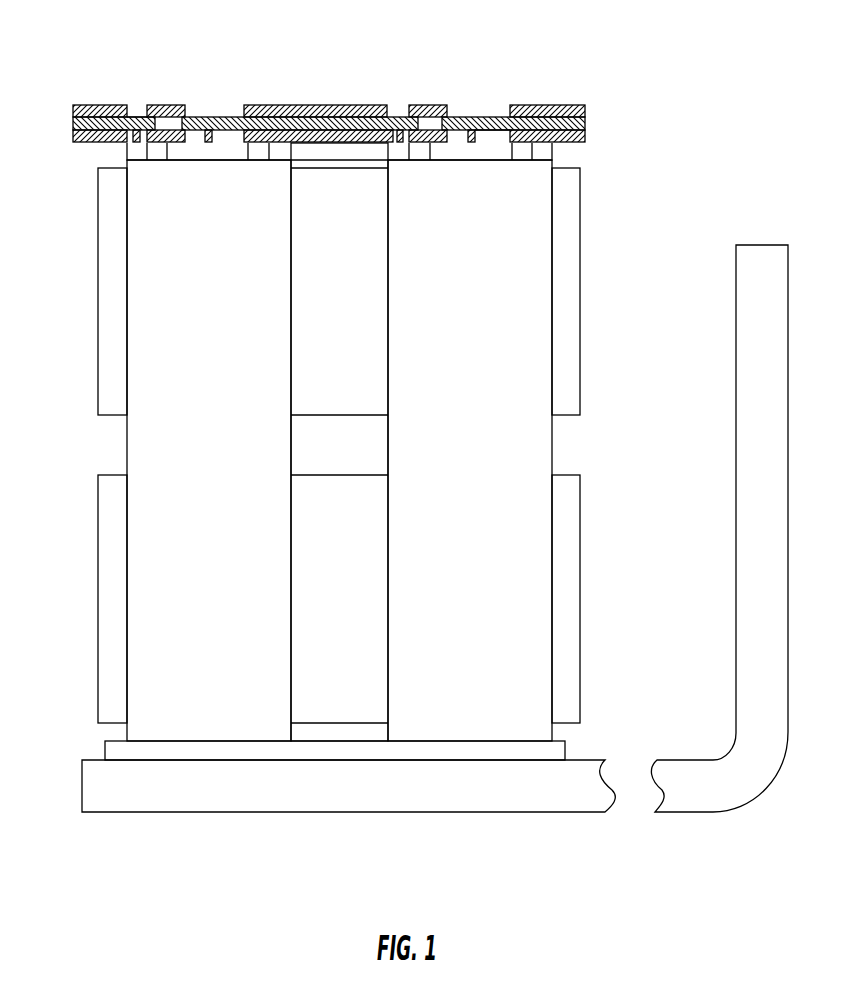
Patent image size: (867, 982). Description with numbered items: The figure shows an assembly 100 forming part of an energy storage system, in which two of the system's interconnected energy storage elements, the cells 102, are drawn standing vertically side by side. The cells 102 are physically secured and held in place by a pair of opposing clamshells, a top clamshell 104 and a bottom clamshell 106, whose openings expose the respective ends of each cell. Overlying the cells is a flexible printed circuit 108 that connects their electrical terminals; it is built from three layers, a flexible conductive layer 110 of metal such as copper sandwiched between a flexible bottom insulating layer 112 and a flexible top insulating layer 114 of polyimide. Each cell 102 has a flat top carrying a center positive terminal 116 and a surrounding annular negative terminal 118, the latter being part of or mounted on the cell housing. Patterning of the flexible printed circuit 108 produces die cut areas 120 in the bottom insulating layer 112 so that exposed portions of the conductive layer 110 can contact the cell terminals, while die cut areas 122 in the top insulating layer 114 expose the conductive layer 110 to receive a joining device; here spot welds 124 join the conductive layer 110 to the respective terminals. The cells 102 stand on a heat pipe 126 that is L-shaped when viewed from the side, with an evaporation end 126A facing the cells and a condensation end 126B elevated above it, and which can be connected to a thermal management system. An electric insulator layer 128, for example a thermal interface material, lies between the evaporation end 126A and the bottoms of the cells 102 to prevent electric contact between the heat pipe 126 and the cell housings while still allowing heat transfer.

The assembly 100 is at (238, 832).
The cells 102 is at (292, 450).
The top clamshell 104 is at (580, 325).
The bottom clamshell 106 is at (580, 543).
The flexible printed circuit 108 is at (72, 105).
The flexible conductive layer 110 is at (587, 122).
The flexible bottom insulating layer 112 is at (587, 138).
The flexible top insulating layer 114 is at (587, 110).
The center positive terminal 116 is at (258, 152).
The annular negative terminal 118 is at (127, 153).
The die cut areas 120 is at (491, 132).
The die cut areas 122 is at (137, 106).
The spot welds 124 is at (398, 127).
The heat pipe 126 is at (660, 816).
The evaporation end 126A is at (472, 812).
The condensation end 126B is at (736, 600).
The electric insulator layer 128 is at (565, 750).